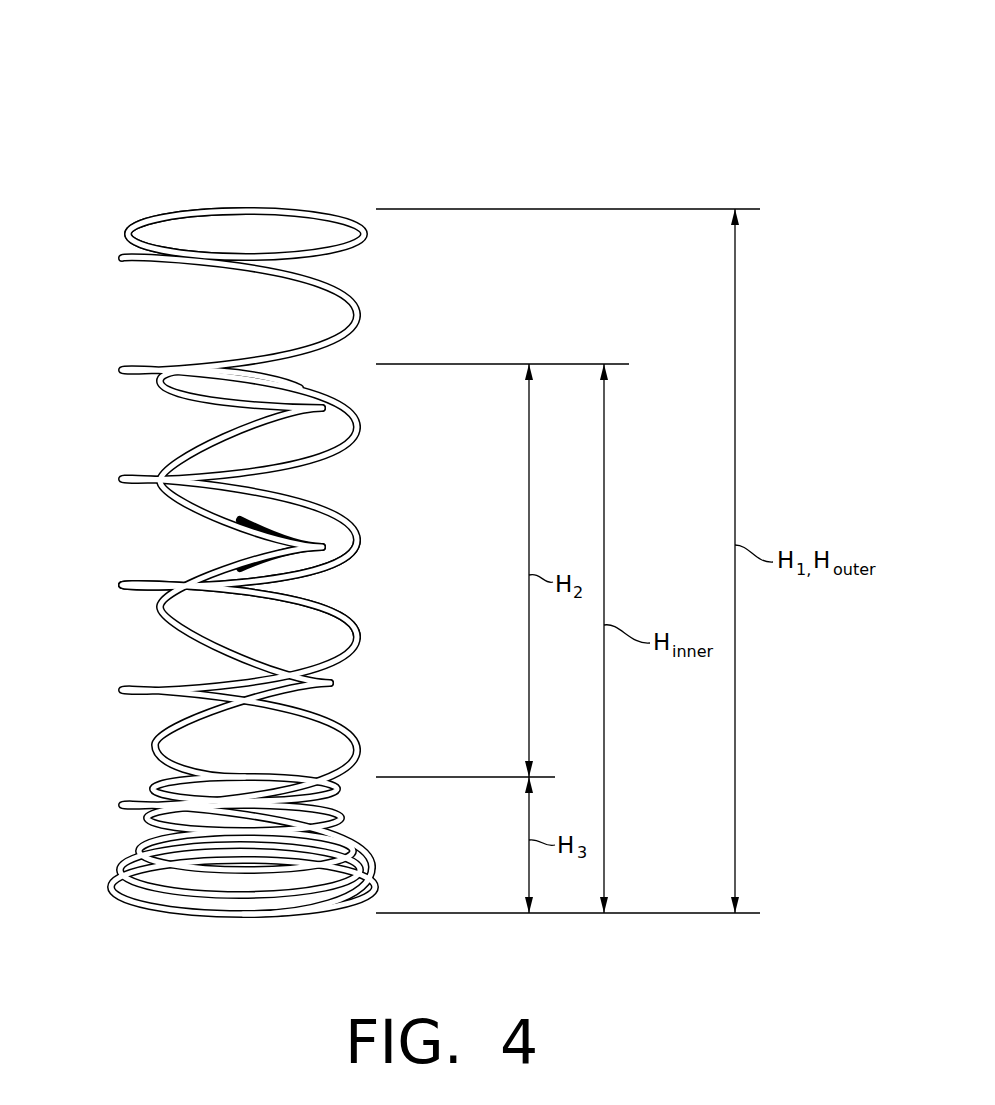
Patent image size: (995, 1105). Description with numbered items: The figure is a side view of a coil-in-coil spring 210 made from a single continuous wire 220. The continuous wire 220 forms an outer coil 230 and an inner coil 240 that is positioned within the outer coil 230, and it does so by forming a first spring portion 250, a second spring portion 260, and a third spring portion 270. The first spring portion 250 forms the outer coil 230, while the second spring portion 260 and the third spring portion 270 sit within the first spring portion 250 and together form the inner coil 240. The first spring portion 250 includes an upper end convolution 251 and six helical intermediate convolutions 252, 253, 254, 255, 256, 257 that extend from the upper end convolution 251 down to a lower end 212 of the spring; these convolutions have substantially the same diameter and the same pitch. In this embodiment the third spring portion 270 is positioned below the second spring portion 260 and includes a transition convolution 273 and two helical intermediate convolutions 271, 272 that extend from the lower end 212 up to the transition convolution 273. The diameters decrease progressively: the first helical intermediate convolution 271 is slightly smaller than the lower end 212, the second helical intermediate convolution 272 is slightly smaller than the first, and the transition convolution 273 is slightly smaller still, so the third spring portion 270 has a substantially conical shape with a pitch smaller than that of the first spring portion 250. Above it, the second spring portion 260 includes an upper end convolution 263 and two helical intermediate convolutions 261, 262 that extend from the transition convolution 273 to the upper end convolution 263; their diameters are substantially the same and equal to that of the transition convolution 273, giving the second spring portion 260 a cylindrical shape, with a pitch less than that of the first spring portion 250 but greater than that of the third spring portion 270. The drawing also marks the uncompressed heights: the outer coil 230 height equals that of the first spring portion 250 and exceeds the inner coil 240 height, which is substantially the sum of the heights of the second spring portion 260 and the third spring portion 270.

The coil-in-coil spring 210 is at (130, 98).
The lower end 212 is at (355, 889).
The continuous wire 220 is at (287, 210).
The outer coil 230 is at (357, 545).
The inner coil 240 is at (320, 537).
The first spring portion 250 is at (358, 632).
The upper end convolution 251 is at (145, 218).
The helical intermediate convolution 252 is at (125, 270).
The helical intermediate convolution 253 is at (132, 362).
The helical intermediate convolution 254 is at (128, 472).
The helical intermediate convolution 255 is at (128, 580).
The helical intermediate convolution 256 is at (130, 688).
The helical intermediate convolution 257 is at (120, 800).
The second spring portion 260 is at (340, 445).
The helical intermediate convolution 261 is at (162, 612).
The helical intermediate convolution 262 is at (180, 512).
The upper end convolution 263 is at (160, 396).
The third spring portion 270 is at (345, 815).
The first helical intermediate convolution 271 is at (140, 840).
The second helical intermediate convolution 272 is at (145, 817).
The transition convolution 273 is at (150, 752).